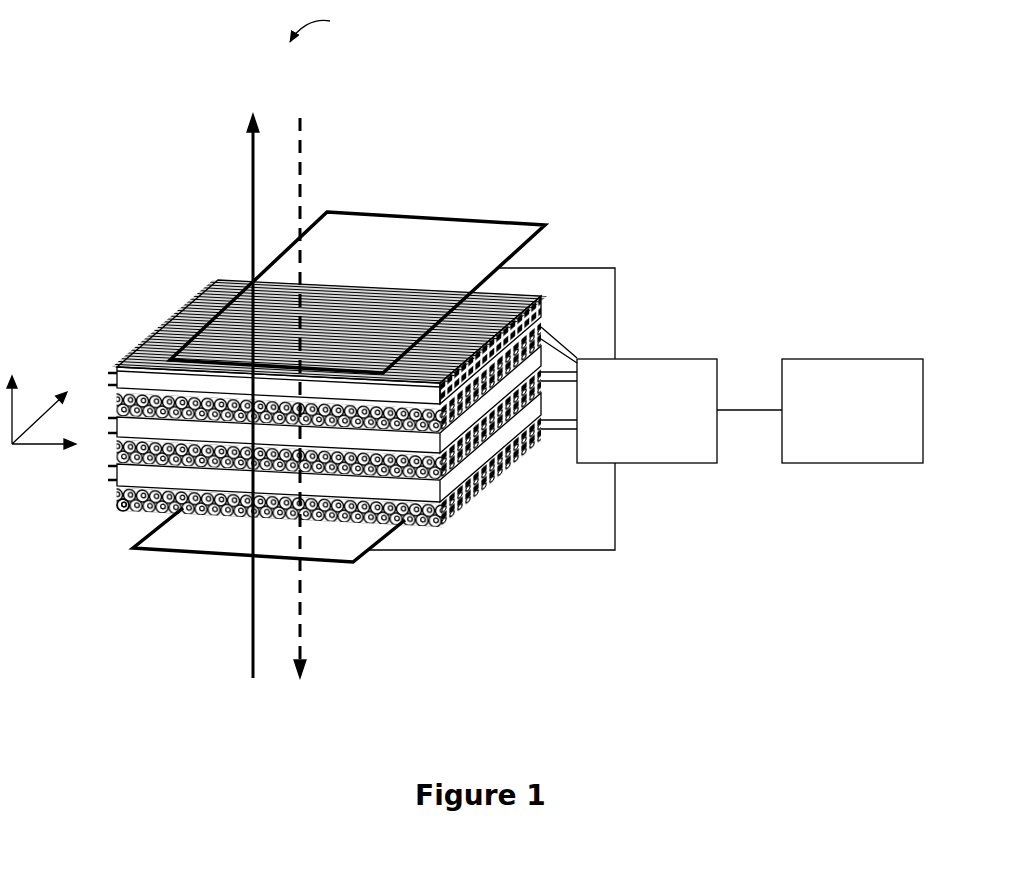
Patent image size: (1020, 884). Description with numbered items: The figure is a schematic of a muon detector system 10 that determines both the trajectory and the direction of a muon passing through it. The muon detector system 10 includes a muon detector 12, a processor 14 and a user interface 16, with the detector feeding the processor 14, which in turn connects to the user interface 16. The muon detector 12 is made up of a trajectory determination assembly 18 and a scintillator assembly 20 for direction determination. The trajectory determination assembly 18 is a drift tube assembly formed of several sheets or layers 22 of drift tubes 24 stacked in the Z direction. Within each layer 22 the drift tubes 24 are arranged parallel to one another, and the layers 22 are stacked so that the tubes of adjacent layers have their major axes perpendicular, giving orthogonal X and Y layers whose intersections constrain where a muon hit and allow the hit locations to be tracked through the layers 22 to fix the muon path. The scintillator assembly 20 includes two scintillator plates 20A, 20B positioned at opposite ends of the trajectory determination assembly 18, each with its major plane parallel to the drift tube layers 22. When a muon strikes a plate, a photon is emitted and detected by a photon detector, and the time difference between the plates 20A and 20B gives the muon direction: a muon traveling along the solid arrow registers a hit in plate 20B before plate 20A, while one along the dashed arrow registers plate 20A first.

The muon detector system 10 is at (465, 361).
The muon detector 12 is at (312, 375).
The processor 14 is at (664, 358).
The user interface 16 is at (869, 358).
The trajectory determination assembly 18 is at (134, 354).
The scintillator assembly 20 is at (351, 370).
The scintillator plate 20A is at (537, 226).
The scintillator plate 20B is at (150, 553).
The layer 22 is at (119, 492).
The drift tube 24 is at (126, 511).